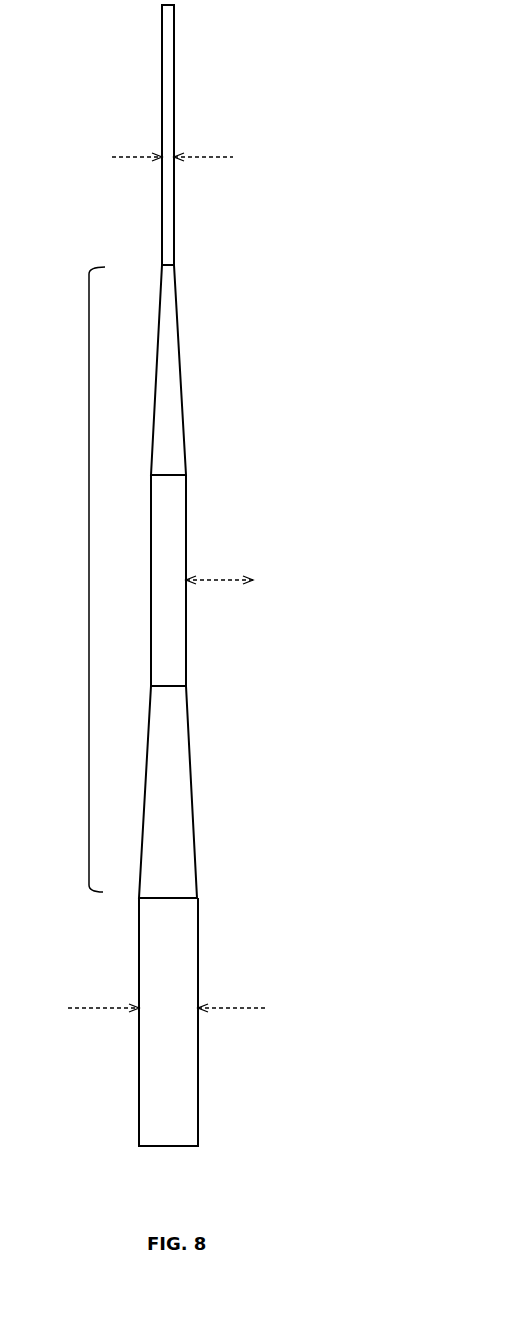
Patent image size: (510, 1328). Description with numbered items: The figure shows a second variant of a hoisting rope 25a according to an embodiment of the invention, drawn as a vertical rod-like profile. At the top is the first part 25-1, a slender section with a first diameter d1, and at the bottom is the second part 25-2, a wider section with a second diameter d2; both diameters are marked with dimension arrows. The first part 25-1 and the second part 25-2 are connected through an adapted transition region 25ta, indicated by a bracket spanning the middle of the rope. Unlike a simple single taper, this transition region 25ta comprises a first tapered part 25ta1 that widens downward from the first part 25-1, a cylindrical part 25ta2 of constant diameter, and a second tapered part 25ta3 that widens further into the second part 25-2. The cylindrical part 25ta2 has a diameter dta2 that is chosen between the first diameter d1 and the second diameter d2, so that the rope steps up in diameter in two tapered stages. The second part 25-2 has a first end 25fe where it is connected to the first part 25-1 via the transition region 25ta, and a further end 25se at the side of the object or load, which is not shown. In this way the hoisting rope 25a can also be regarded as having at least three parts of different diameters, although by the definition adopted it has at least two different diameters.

The hoisting rope 25a is at (127, 88).
The first part 25-1 is at (223, 6).
The first tapered part 25ta1 is at (222, 266).
The cylindrical part 25ta2 is at (233, 476).
The second tapered part 25ta3 is at (245, 687).
The second part 25-2 is at (257, 899).
The adapted transition region 25ta is at (151, 580).
The first end 25fe is at (139, 912).
The further end 25se is at (139, 1130).
The first diameter d1 is at (172, 148).
The diameter of the cylindrical part dta2 is at (219, 572).
The second diameter d2 is at (168, 999).